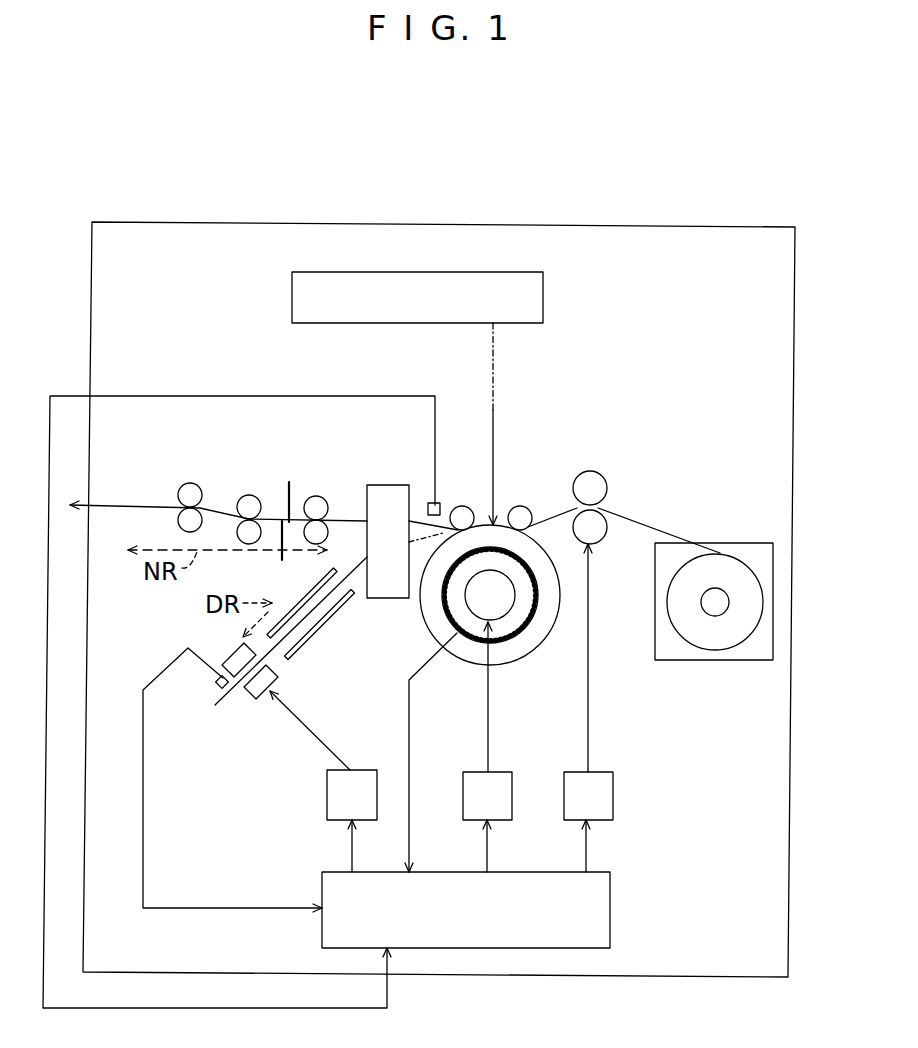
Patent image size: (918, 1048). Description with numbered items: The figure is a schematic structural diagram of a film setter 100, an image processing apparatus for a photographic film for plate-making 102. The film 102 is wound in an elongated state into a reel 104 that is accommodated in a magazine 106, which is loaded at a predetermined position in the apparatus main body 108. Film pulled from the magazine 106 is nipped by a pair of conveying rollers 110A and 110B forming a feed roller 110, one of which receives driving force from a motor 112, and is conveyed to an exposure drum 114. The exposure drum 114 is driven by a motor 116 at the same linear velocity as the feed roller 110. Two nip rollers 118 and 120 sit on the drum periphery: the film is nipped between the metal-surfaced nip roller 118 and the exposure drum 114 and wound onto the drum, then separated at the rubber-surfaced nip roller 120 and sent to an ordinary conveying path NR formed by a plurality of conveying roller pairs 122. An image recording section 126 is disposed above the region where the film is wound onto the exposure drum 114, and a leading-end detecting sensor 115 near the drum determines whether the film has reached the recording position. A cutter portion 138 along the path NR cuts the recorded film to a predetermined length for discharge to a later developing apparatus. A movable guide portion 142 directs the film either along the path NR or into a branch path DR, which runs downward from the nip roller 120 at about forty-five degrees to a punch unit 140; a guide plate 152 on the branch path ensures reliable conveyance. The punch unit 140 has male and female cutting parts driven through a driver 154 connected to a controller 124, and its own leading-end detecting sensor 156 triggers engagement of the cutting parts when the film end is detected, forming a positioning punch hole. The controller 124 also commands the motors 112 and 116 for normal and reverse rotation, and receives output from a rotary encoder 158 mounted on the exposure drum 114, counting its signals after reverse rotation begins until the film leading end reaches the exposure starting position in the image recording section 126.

The film setter 100 is at (602, 377).
The photographic film for plate-making 102 is at (650, 527).
The reel 104 is at (718, 606).
The magazine 106 is at (714, 591).
The apparatus main body 108 is at (630, 226).
The feed roller 110 is at (628, 498).
The conveying roller 110A is at (596, 486).
The conveying roller 110B is at (600, 528).
The motor 112 is at (613, 797).
The exposure drum 114 is at (496, 648).
The leading-end detecting sensor 115 is at (428, 503).
The motor 116 is at (470, 775).
The nip roller 118 is at (521, 506).
The nip roller 120 is at (462, 506).
The conveying roller pairs 122 is at (240, 497).
The controller 124 is at (610, 907).
The image recording section 126 is at (547, 284).
The cutter portion 138 is at (287, 481).
The punch unit 140 is at (290, 683).
The movable guide portion 142 is at (390, 599).
The guide plate 152 is at (293, 606).
The driver 154 is at (327, 790).
The leading-end detecting sensor 156 is at (217, 688).
The rotary encoder 158 is at (511, 650).